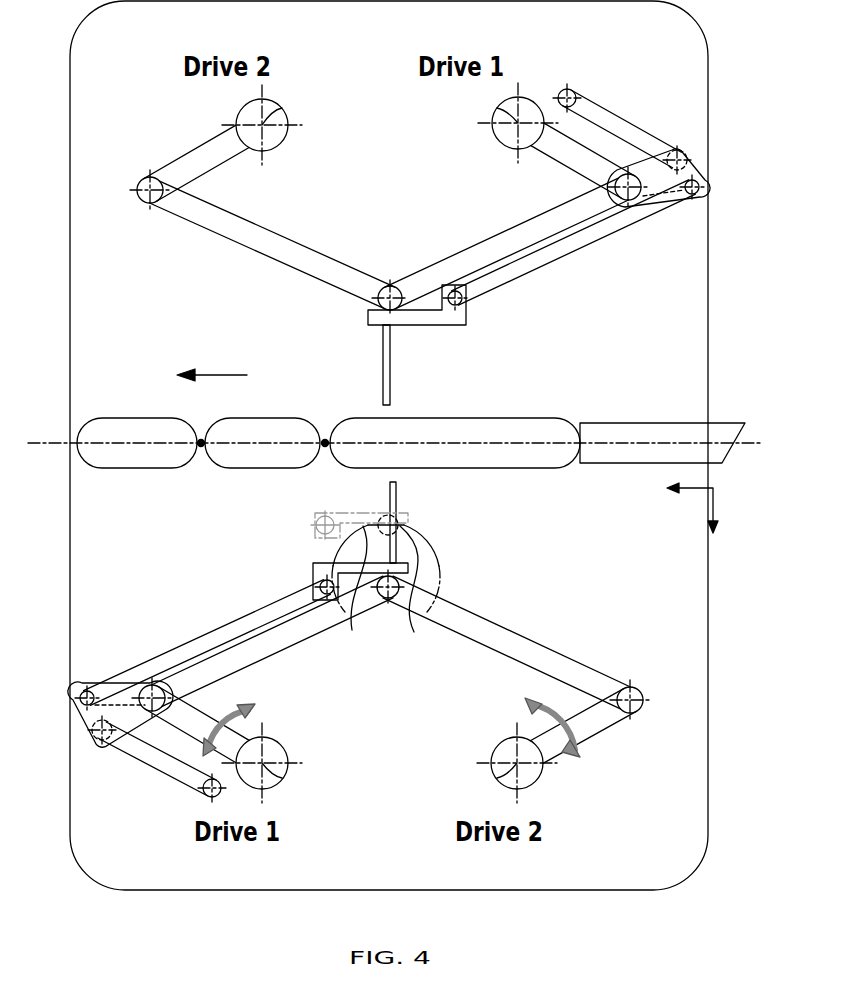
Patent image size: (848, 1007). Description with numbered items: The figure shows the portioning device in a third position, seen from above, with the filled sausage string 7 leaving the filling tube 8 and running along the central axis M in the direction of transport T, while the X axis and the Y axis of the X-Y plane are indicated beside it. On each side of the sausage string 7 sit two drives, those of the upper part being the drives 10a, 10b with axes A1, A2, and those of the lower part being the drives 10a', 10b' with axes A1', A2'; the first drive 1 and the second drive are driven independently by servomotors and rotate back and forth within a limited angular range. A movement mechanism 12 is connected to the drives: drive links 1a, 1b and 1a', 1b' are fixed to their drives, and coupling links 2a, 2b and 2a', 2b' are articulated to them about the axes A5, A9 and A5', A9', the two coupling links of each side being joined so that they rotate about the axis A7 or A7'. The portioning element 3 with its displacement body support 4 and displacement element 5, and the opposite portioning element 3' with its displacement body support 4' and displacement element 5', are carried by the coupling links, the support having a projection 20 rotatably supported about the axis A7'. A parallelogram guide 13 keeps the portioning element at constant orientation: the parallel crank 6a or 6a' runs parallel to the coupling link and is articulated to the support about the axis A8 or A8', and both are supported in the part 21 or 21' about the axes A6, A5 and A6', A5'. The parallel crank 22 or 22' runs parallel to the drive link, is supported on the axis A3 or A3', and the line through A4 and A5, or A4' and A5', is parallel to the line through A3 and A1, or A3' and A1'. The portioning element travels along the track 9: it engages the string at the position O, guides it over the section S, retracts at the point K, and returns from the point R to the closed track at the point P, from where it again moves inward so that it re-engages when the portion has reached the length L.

The drive 1 is at (592, 64).
The drive link 1a is at (576, 160).
The drive link 1b is at (199, 163).
The coupling link 2a is at (507, 243).
The coupling link 2b is at (272, 245).
The portioning element 3 is at (522, 294).
The displacement body support 4 is at (432, 315).
The displacement element 5 is at (403, 365).
The parallel crank 6a is at (574, 242).
The sausage string 7 is at (547, 470).
The filling tube 8 is at (603, 470).
The track 9 is at (444, 652).
The drive 10a is at (473, 151).
The drive 10b is at (304, 151).
The movement mechanism 12 is at (538, 589).
The parallelogram guide 13 is at (250, 633).
The projection 20 is at (400, 516).
The part 21 is at (675, 173).
The parallel crank 22 is at (622, 129).
The axis A1 is at (502, 123).
The axis A2 is at (272, 125).
The axis A3 is at (586, 97).
The axis A4 is at (679, 139).
The axis A5 is at (628, 215).
The axis A6 is at (692, 212).
The axis A7 is at (390, 277).
The axis A8 is at (474, 308).
The axis A9 is at (144, 205).
The drive link 1a' is at (218, 725).
The drive link 1b' is at (574, 715).
The coupling link 2a' is at (272, 641).
The coupling link 2b' is at (507, 642).
The portioning element 3' is at (265, 538).
The displacement body support 4' is at (347, 505).
The displacement element 5' is at (374, 518).
The parallel crank 6a' is at (207, 643).
The drive 10a' is at (306, 741).
The drive 10b' is at (470, 741).
The part 21' is at (114, 721).
The parallel crank 22' is at (157, 759).
The axis A1' is at (277, 770).
The axis A2' is at (507, 763).
The axis A3' is at (191, 797).
The axis A4' is at (102, 753).
The axis A5' is at (182, 698).
The axis A6' is at (88, 680).
The axis A7' is at (388, 626).
The axis A8' is at (307, 520).
The axis A9' is at (640, 689).
The central axis M is at (45, 440).
The length L is at (258, 459).
The direction of transport T is at (212, 368).
The position O is at (405, 526).
The point P is at (440, 563).
The point R is at (332, 551).
The point K is at (359, 586).
The section S is at (411, 586).
The X axis X is at (686, 519).